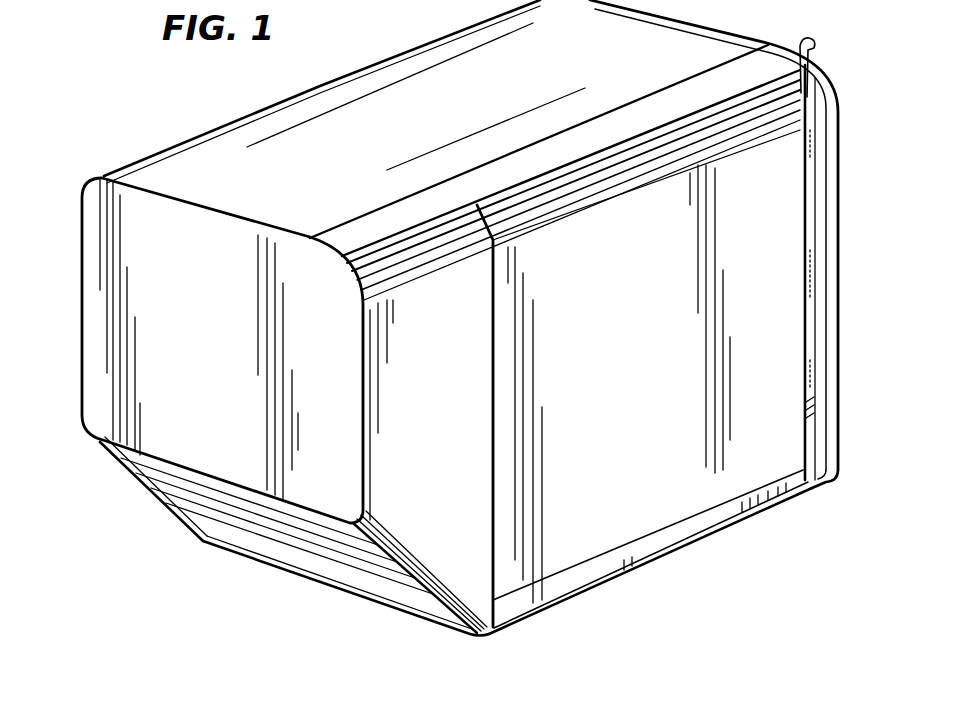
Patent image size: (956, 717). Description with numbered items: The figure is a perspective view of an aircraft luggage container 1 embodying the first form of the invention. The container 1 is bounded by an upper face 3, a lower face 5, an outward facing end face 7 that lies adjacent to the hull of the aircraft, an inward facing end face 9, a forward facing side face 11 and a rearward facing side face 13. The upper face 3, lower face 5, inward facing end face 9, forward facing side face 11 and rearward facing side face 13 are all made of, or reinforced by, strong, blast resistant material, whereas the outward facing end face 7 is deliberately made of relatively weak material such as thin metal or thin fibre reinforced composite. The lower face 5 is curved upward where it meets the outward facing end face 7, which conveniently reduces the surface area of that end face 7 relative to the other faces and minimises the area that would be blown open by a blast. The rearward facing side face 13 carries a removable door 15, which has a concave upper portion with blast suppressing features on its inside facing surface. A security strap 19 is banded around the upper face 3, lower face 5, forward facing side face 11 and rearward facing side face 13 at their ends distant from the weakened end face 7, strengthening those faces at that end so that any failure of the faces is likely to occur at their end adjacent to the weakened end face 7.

The luggage container 1 is at (655, 577).
The upper face 3 is at (413, 93).
The lower face 5 is at (563, 557).
The outward facing end face 7 is at (143, 343).
The inward facing end face 9 is at (773, 277).
The forward facing side face 11 is at (128, 233).
The rearward facing side face 13 is at (710, 477).
The removable door 15 is at (492, 553).
The security strap 19 is at (813, 470).